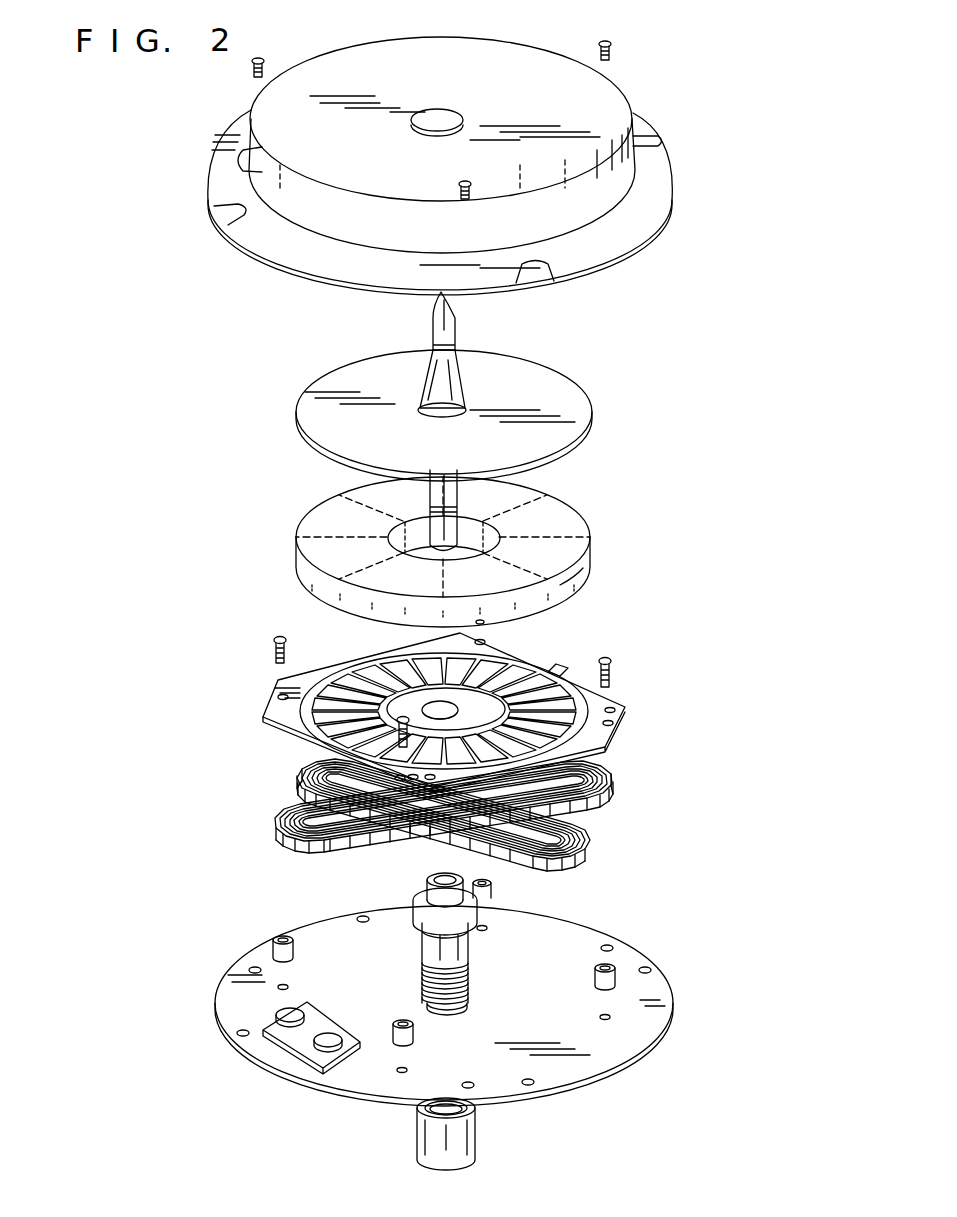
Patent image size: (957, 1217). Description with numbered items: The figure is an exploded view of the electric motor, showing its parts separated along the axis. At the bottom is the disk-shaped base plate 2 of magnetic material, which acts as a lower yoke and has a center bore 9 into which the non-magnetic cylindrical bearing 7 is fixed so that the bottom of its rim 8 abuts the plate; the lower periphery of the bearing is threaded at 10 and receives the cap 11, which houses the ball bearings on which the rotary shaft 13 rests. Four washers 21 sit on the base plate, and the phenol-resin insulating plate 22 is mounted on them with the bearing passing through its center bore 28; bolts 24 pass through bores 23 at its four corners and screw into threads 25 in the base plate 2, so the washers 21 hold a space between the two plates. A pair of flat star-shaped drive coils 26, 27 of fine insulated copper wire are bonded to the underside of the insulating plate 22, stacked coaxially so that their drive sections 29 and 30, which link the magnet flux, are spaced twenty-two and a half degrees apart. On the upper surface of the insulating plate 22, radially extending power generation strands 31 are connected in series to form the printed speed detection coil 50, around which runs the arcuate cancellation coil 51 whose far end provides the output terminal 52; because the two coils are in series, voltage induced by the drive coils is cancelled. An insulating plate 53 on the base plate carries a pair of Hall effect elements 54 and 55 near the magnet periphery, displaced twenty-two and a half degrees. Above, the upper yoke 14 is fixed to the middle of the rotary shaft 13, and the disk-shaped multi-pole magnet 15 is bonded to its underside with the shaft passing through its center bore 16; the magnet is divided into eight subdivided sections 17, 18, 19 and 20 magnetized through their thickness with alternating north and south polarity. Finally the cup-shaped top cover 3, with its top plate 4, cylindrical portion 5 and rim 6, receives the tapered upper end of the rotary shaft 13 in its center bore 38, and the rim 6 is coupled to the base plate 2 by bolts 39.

The base plate 2 is at (444, 991).
The top cover 3 is at (428, 155).
The top plate 4 is at (506, 57).
The cylindrical portion 5 is at (256, 154).
The rim 6 is at (247, 224).
The bearing 7 is at (434, 944).
The rim 8 is at (414, 913).
The center bore 9 is at (466, 1006).
The threads 10 is at (421, 980).
The cap 11 is at (476, 1138).
The rotary shaft 13 is at (447, 474).
The upper yoke 14 is at (577, 408).
The multi-pole magnet 15 is at (447, 562).
The center bore 16 is at (488, 546).
The subdivided section 17 is at (418, 611).
The subdivided section 18 is at (353, 601).
The subdivided section 19 is at (312, 583).
The subdivided section 20 is at (585, 573).
The washers 21 is at (294, 947).
The insulating plate 22 is at (446, 701).
The bores 23 is at (487, 643).
The bolts 24 is at (274, 650).
The threads 25 is at (287, 986).
The drive coil 26 is at (423, 829).
The drive coil 27 is at (312, 853).
The center bore 28 is at (458, 712).
The drive section 29 is at (350, 831).
The drive section 30 is at (393, 858).
The power generation strand 31 is at (471, 829).
The center bore 38 is at (466, 119).
The bolts 39 is at (263, 63).
The speed detection coil 50 is at (558, 676).
The cancellation coil 51 is at (337, 673).
The output terminal 52 is at (617, 710).
The insulating plate 53 is at (312, 1038).
The Hall effect element 54 is at (279, 1009).
The Hall effect element 55 is at (331, 1037).